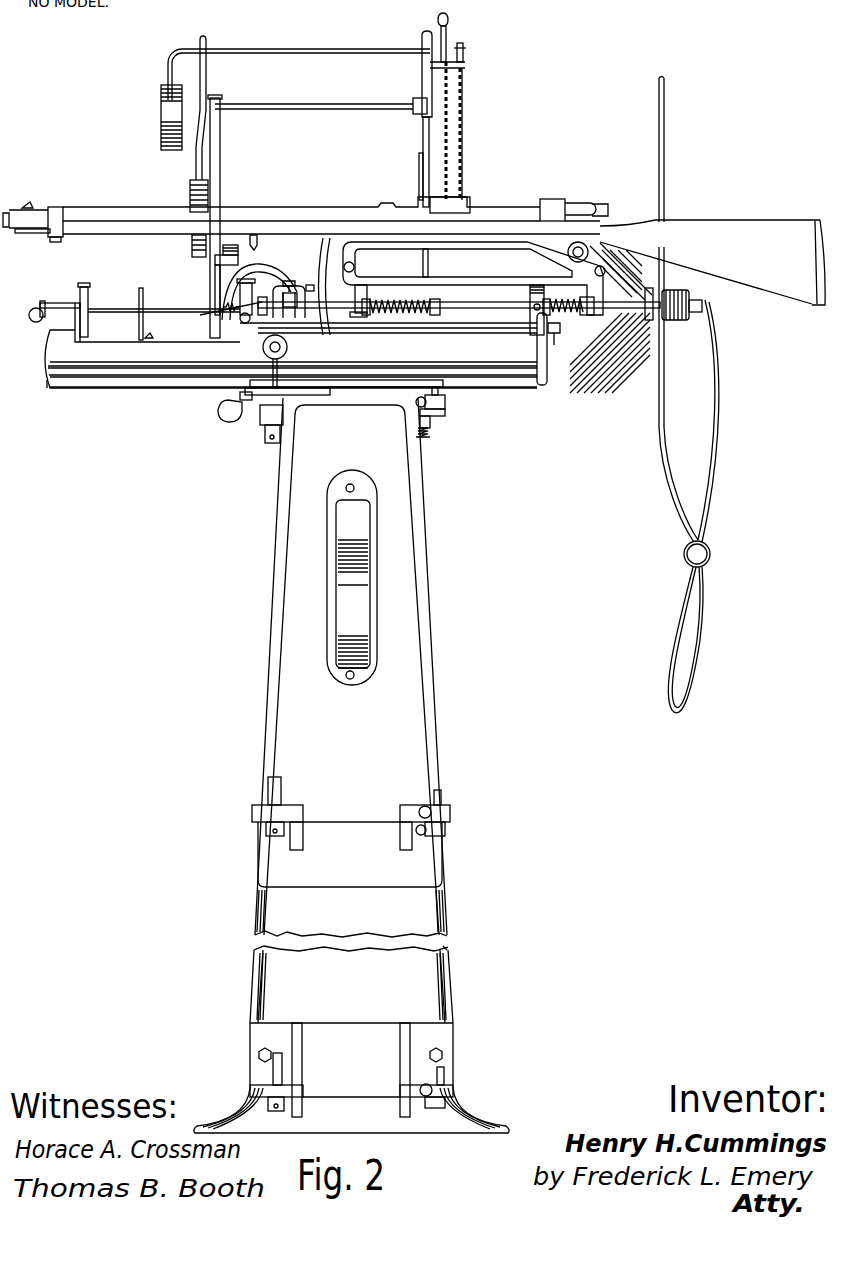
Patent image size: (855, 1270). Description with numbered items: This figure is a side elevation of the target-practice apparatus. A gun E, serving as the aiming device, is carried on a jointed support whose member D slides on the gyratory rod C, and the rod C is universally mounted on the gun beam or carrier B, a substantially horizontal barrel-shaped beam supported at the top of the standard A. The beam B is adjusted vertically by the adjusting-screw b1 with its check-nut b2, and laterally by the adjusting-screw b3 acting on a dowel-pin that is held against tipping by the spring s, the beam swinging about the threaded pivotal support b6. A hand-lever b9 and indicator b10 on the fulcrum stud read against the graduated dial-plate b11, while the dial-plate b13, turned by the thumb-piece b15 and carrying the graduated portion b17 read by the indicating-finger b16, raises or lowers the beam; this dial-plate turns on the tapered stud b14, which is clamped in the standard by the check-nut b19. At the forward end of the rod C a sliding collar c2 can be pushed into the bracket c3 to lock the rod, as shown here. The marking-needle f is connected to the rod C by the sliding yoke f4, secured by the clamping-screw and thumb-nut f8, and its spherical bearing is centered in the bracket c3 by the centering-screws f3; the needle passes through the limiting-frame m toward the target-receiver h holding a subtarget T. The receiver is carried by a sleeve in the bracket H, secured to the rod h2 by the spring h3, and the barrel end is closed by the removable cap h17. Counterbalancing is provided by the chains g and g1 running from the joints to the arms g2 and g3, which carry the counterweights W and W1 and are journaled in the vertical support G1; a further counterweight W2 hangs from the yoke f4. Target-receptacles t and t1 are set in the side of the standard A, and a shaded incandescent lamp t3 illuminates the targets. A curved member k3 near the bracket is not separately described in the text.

The gun E is at (737, 235).
The vertical support G1 is at (221, 165).
The counterweight W1 is at (161, 128).
The counterweight W is at (190, 193).
The counterweight W2 is at (240, 248).
The arm g3 is at (448, 28).
The arm g2 is at (465, 55).
The chain g is at (463, 105).
The chain g1 is at (450, 138).
The curved arm k3 is at (323, 255).
The bracket c3 is at (262, 268).
The sliding collar c2 is at (290, 281).
The sliding yoke f4 is at (257, 246).
The clamping-screw and thumb-nut f8 is at (313, 277).
The centering-screws f3 is at (215, 307).
The gun beam B is at (296, 350).
The target T is at (87, 290).
The target-receiver h is at (80, 295).
The indicating-needle f is at (105, 307).
The limiting-frame m is at (144, 300).
The bracket H is at (38, 310).
The rod h2 is at (30, 320).
The removable cap h17 is at (48, 388).
The spring h3 is at (556, 345).
The joint of gun-support D is at (455, 283).
The gyratory rod C is at (530, 301).
The shaded incandescent lamp t3 is at (592, 362).
The graduated dial-plate b11 is at (246, 324).
The indicator b10 is at (288, 347).
The hand-lever b9 is at (285, 378).
The indicating-finger b16 is at (330, 382).
The graduated portion b17 is at (300, 392).
The threaded pivotal support b6 is at (240, 394).
The thumb-piece b15 is at (225, 412).
The tapered stud b14 is at (283, 1075).
The check-nut b19 is at (272, 1112).
The dial-plate b13 is at (308, 406).
The adjusting-screw b1 is at (445, 1072).
The check-nut b2 is at (446, 413).
The lateral adjusting-screw b3 is at (431, 428).
The spring s is at (427, 442).
The standard A is at (351, 765).
The target-receptacle t is at (340, 526).
The target-receptacle t1 is at (338, 618).